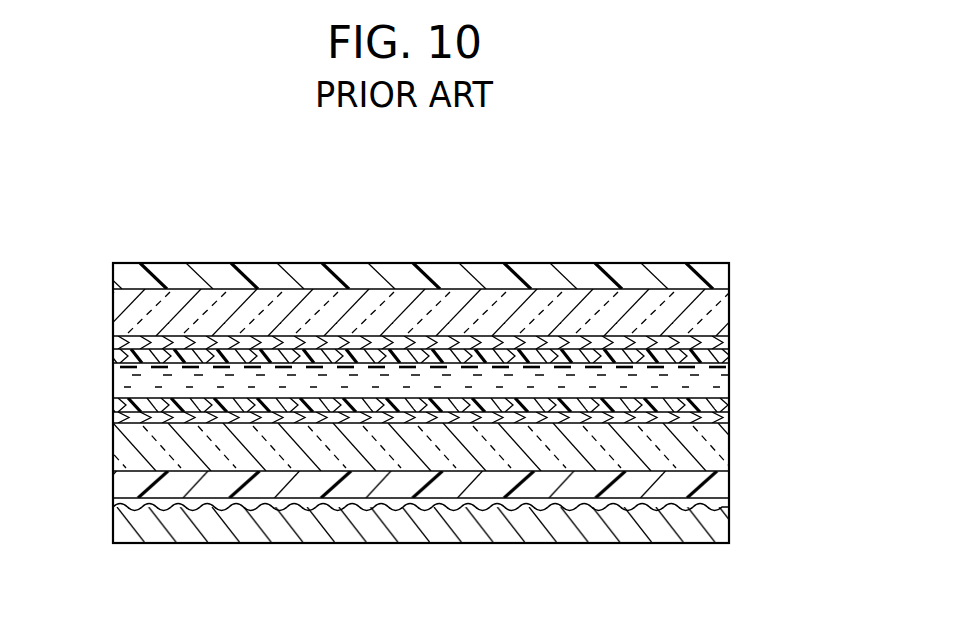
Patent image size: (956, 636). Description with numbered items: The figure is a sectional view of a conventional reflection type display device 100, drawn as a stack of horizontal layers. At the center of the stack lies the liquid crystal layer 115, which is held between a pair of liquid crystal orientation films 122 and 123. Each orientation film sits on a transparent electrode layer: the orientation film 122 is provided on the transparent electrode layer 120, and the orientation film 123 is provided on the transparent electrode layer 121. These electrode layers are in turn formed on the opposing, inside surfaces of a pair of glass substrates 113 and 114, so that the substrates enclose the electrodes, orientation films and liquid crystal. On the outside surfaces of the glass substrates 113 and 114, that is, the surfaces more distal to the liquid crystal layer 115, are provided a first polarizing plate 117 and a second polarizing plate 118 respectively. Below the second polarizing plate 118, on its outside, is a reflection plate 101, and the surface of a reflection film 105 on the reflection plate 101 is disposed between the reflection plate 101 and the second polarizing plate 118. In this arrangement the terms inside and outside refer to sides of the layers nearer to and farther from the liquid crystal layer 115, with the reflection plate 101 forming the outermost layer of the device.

The reflection type display device 100 is at (553, 240).
The reflection plate 101 is at (720, 526).
The reflection film 105 is at (657, 509).
The glass substrate 113 is at (720, 318).
The glass substrate 114 is at (720, 447).
The liquid crystal layer 115 is at (713, 383).
The first polarizing plate 117 is at (720, 273).
The second polarizing plate 118 is at (720, 487).
The transparent electrode layer 120 is at (130, 345).
The transparent electrode layer 121 is at (130, 415).
The liquid crystal orientation film 122 is at (130, 357).
The liquid crystal orientation film 123 is at (130, 407).